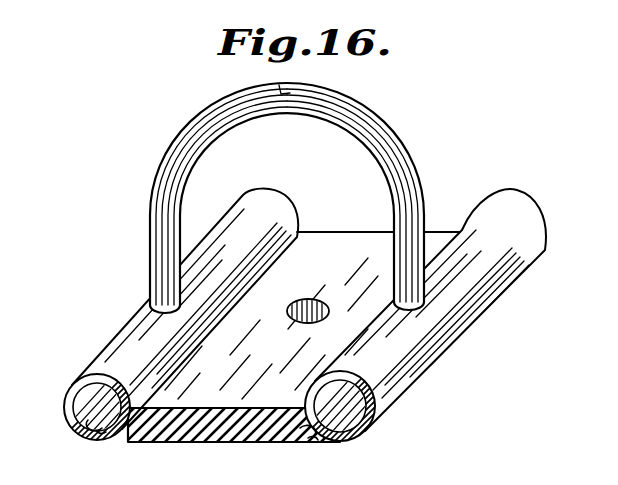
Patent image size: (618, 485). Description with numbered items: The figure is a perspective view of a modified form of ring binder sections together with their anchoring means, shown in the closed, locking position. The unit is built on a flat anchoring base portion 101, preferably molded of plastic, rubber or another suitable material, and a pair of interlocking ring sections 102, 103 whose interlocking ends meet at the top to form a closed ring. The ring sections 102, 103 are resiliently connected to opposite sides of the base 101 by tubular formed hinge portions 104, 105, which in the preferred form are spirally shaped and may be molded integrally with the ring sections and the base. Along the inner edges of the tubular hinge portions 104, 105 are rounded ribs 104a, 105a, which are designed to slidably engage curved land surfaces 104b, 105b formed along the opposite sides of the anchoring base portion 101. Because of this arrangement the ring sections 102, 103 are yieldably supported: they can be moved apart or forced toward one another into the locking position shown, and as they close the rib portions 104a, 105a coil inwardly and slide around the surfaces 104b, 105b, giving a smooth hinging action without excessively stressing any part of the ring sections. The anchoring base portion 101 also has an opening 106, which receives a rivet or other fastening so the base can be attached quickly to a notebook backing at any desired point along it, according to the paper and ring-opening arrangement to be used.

The flat anchoring base portion 101 is at (217, 385).
The interlocking ring section 102 is at (165, 200).
The interlocking ring section 103 is at (395, 163).
The tubular formed hinge portion 104 is at (100, 353).
The rounded rib 104a is at (77, 425).
The curved land surface 104b is at (127, 428).
The tubular formed hinge portion 105 is at (400, 362).
The rounded rib 105a is at (367, 425).
The curved land surface 105b is at (303, 432).
The opening 106 is at (311, 297).